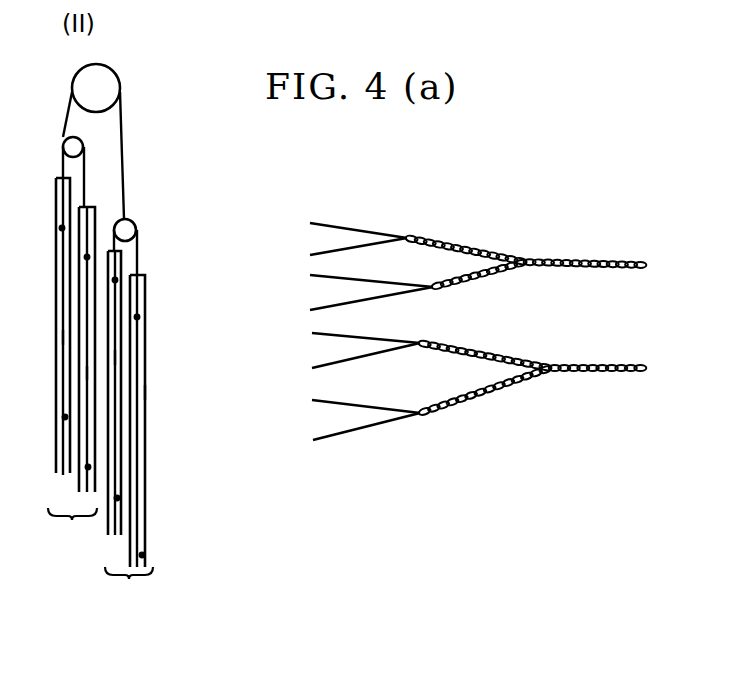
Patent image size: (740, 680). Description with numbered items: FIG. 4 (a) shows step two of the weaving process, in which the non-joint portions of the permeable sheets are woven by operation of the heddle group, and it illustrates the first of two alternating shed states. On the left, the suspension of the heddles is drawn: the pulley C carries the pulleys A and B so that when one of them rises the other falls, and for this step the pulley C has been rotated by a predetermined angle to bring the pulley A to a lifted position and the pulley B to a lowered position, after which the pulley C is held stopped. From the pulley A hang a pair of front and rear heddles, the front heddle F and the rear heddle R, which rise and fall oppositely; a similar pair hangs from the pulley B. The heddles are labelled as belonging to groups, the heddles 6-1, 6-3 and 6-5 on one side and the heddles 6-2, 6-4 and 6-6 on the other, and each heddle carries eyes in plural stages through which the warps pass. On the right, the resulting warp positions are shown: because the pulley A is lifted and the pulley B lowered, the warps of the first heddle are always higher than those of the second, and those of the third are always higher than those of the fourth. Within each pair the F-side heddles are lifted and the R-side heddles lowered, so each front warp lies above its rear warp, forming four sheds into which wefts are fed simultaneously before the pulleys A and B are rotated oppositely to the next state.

The pulley A is at (63, 143).
The pulley B is at (133, 221).
The pulley C is at (110, 77).
The front heddle F is at (63, 337).
The rear heddle R is at (85, 373).
The heddle 6-1 is at (71, 365).
The heddle 6-2 is at (125, 429).
The heddle 6-3 is at (74, 393).
The heddle 6-4 is at (126, 455).
The heddle 6-5 is at (76, 640).
The heddle 6-6 is at (130, 677).